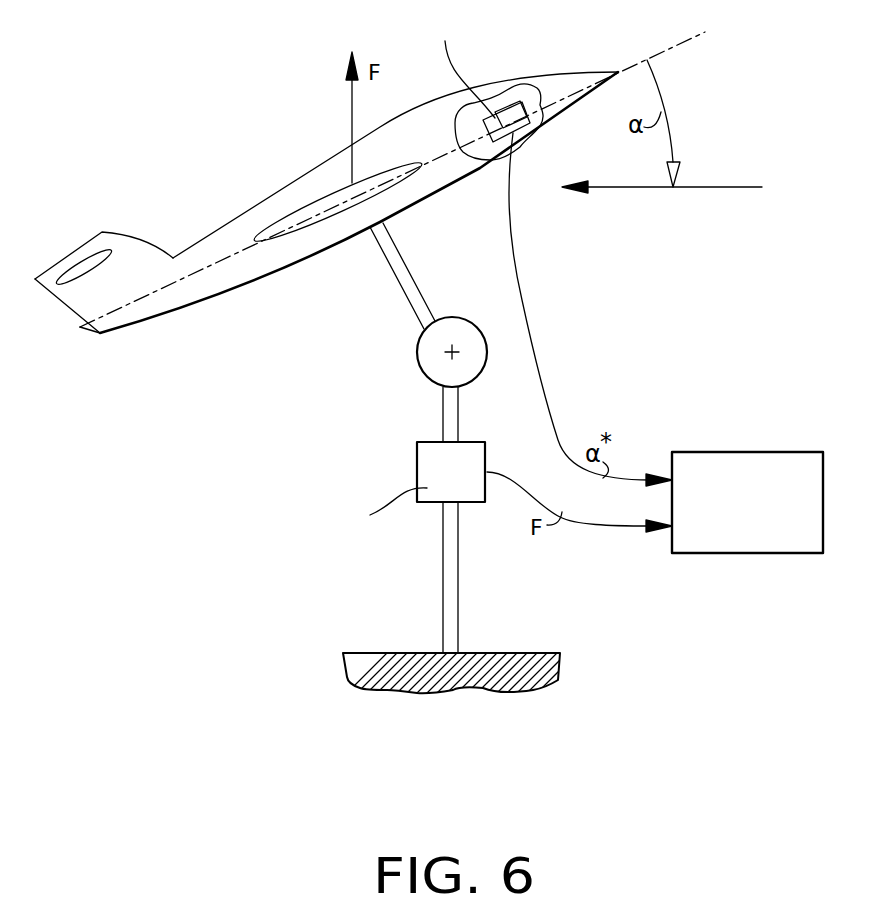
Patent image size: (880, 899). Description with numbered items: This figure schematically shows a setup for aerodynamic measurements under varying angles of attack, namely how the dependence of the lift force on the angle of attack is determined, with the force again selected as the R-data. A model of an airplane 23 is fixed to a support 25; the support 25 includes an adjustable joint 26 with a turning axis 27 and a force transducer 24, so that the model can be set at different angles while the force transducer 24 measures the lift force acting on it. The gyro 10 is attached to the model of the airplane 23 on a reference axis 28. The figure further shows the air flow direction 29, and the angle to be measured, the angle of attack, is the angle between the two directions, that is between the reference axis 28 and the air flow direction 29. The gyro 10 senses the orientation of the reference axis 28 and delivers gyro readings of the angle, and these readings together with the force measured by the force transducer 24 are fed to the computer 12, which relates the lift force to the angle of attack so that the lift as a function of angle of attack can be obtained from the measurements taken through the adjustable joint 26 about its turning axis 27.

The model of an airplane 23 is at (283, 205).
The gyro 10 is at (522, 85).
The reference axis 28 is at (577, 90).
The air flow direction 29 is at (703, 185).
The turning axis 27 is at (463, 320).
The adjustable joint 26 is at (420, 353).
The force transducer 24 is at (425, 455).
The support 25 is at (355, 592).
The computer 12 is at (760, 452).